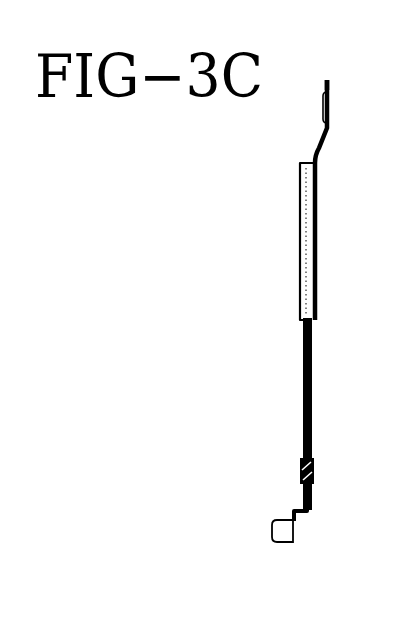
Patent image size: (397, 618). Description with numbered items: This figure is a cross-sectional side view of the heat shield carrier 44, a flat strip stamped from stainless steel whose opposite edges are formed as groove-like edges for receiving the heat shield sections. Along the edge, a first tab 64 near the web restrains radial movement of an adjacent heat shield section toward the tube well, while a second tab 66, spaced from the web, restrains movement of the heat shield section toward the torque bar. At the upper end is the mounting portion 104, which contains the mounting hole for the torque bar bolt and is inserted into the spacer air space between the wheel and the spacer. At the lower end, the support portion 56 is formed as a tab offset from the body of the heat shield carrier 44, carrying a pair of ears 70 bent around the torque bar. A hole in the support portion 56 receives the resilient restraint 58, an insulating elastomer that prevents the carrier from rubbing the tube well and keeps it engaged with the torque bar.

The heat shield carrier 44 is at (297, 147).
The mounting portion 104 is at (328, 80).
The second tab 66 is at (300, 247).
The first tab 64 is at (302, 398).
The resilient restraint 58 is at (316, 473).
The support portion 56 is at (293, 527).
The ears 70 is at (283, 528).